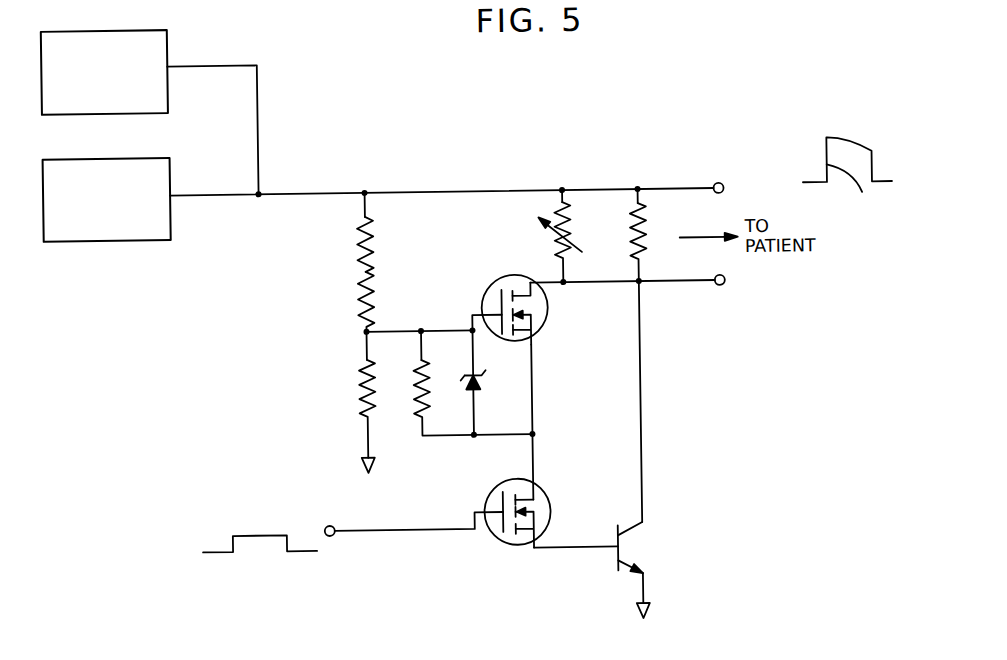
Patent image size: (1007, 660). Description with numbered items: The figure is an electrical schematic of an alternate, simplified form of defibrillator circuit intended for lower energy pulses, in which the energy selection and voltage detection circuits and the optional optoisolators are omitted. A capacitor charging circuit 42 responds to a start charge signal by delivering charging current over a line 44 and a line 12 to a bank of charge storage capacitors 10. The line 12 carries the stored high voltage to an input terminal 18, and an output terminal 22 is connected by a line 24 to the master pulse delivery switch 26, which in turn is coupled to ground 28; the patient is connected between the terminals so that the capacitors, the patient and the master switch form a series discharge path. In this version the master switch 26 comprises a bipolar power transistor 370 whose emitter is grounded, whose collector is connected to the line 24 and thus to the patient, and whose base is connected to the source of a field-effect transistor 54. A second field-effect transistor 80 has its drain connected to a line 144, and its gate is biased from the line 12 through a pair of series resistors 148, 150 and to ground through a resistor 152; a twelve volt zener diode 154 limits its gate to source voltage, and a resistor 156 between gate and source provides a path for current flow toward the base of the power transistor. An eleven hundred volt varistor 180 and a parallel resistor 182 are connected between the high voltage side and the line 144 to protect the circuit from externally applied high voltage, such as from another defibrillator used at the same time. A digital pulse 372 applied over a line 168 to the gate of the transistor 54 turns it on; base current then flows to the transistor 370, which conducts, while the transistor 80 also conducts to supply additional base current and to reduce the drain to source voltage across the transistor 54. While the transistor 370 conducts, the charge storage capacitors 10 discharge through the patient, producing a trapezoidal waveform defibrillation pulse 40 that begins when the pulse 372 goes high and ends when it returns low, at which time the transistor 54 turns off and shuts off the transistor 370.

The charge storage capacitors 10 is at (133, 236).
The line 12 is at (422, 192).
The input terminal 18 is at (725, 186).
The output terminal 22 is at (722, 290).
The line 24 is at (640, 400).
The master pulse delivery switch 26 is at (650, 549).
The ground 28 is at (648, 612).
The trapezoidal waveform defibrillation pulse 40 is at (847, 178).
The capacitor charging circuit 42 is at (171, 40).
The line 44 is at (260, 115).
The field-effect transistor 54 is at (538, 506).
The field-effect transistor 80 is at (546, 304).
The line 144 is at (596, 284).
The resistor 148 is at (374, 291).
The resistor 150 is at (374, 233).
The resistor 152 is at (359, 381).
The zener diode 154 is at (479, 385).
The resistor 156 is at (414, 399).
The line 168 is at (387, 529).
The varistor 180 is at (559, 248).
The resistor 182 is at (631, 247).
The bipolar power transistor 370 is at (637, 539).
The digital pulse 372 is at (257, 534).